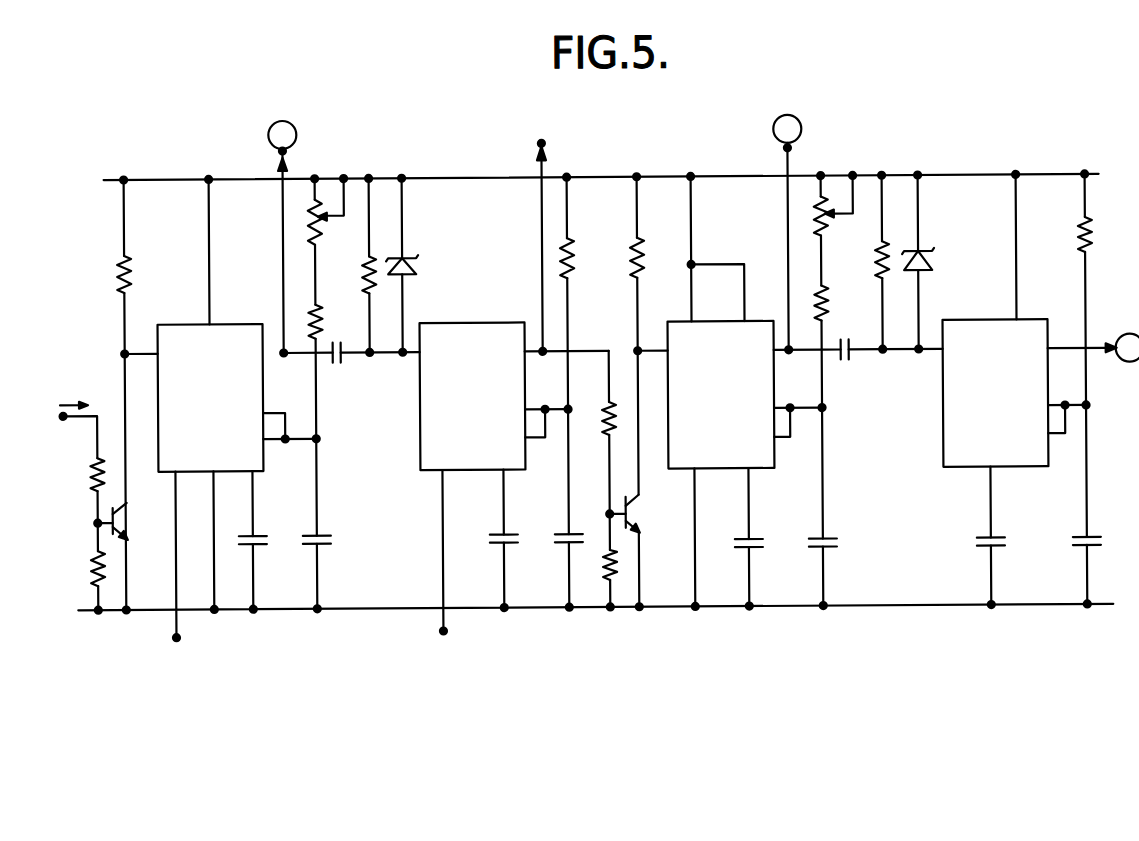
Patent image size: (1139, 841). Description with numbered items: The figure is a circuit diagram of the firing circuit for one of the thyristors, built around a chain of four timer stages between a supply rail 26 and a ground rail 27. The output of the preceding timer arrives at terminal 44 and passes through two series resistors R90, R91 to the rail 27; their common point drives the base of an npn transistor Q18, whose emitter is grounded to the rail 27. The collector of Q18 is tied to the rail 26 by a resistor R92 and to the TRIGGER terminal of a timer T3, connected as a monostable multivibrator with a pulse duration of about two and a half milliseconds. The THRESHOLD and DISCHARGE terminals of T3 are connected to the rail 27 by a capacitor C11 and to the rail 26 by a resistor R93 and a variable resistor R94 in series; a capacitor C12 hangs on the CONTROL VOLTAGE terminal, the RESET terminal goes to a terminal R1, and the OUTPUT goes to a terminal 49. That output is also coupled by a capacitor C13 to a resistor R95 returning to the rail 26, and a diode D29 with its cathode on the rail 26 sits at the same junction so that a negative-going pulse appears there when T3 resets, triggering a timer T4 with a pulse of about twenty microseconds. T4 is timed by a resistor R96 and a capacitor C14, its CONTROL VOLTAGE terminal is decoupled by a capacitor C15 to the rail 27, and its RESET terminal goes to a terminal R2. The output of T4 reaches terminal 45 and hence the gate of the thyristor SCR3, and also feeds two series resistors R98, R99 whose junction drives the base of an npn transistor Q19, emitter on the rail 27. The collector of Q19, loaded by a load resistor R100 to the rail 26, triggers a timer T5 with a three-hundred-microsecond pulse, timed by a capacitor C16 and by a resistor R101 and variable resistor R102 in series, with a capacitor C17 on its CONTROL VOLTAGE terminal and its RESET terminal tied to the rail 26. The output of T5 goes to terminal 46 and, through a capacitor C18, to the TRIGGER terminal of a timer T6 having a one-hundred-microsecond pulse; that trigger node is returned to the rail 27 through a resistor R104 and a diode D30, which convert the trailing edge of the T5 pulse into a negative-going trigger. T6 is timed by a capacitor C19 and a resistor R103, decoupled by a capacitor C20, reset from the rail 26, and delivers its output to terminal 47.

The rail 26 is at (428, 178).
The rail 27 is at (541, 609).
The terminal 44 is at (75, 430).
The terminal 45 is at (525, 246).
The terminal 46 is at (793, 150).
The terminal 47 is at (1116, 356).
The terminal 49 is at (282, 151).
The terminal R1 is at (189, 563).
The terminal R2 is at (457, 561).
The resistor R90 is at (92, 480).
The resistor R91 is at (92, 577).
The resistor R92 is at (130, 275).
The resistor R93 is at (310, 320).
The variable resistor R94 is at (310, 222).
The resistor R95 is at (365, 283).
The resistor R96 is at (600, 234).
The resistor R98 is at (604, 415).
The resistor R99 is at (604, 560).
The load resistor R100 is at (630, 268).
The resistor R101 is at (828, 297).
The variable resistor R102 is at (818, 215).
The resistor R103 is at (1080, 248).
The resistor R104 is at (878, 272).
The capacitor C11 is at (307, 542).
The capacitor C12 is at (258, 540).
The capacitor C13 is at (338, 362).
The capacitor C14 is at (557, 539).
The capacitor C15 is at (515, 539).
The capacitor C16 is at (810, 546).
The capacitor C17 is at (752, 545).
The capacitor C18 is at (847, 361).
The capacitor C19 is at (1082, 546).
The capacitor C20 is at (980, 546).
The diode D29 is at (410, 268).
The diode D30 is at (925, 264).
The npn transistor Q18 is at (124, 514).
The npn transistor Q19 is at (640, 515).
The timer integrated circuit T3 is at (158, 448).
The timer T4 is at (420, 447).
The timer T5 is at (668, 470).
The timer circuit T6 is at (943, 469).
The thyristor SCR3 is at (547, 130).